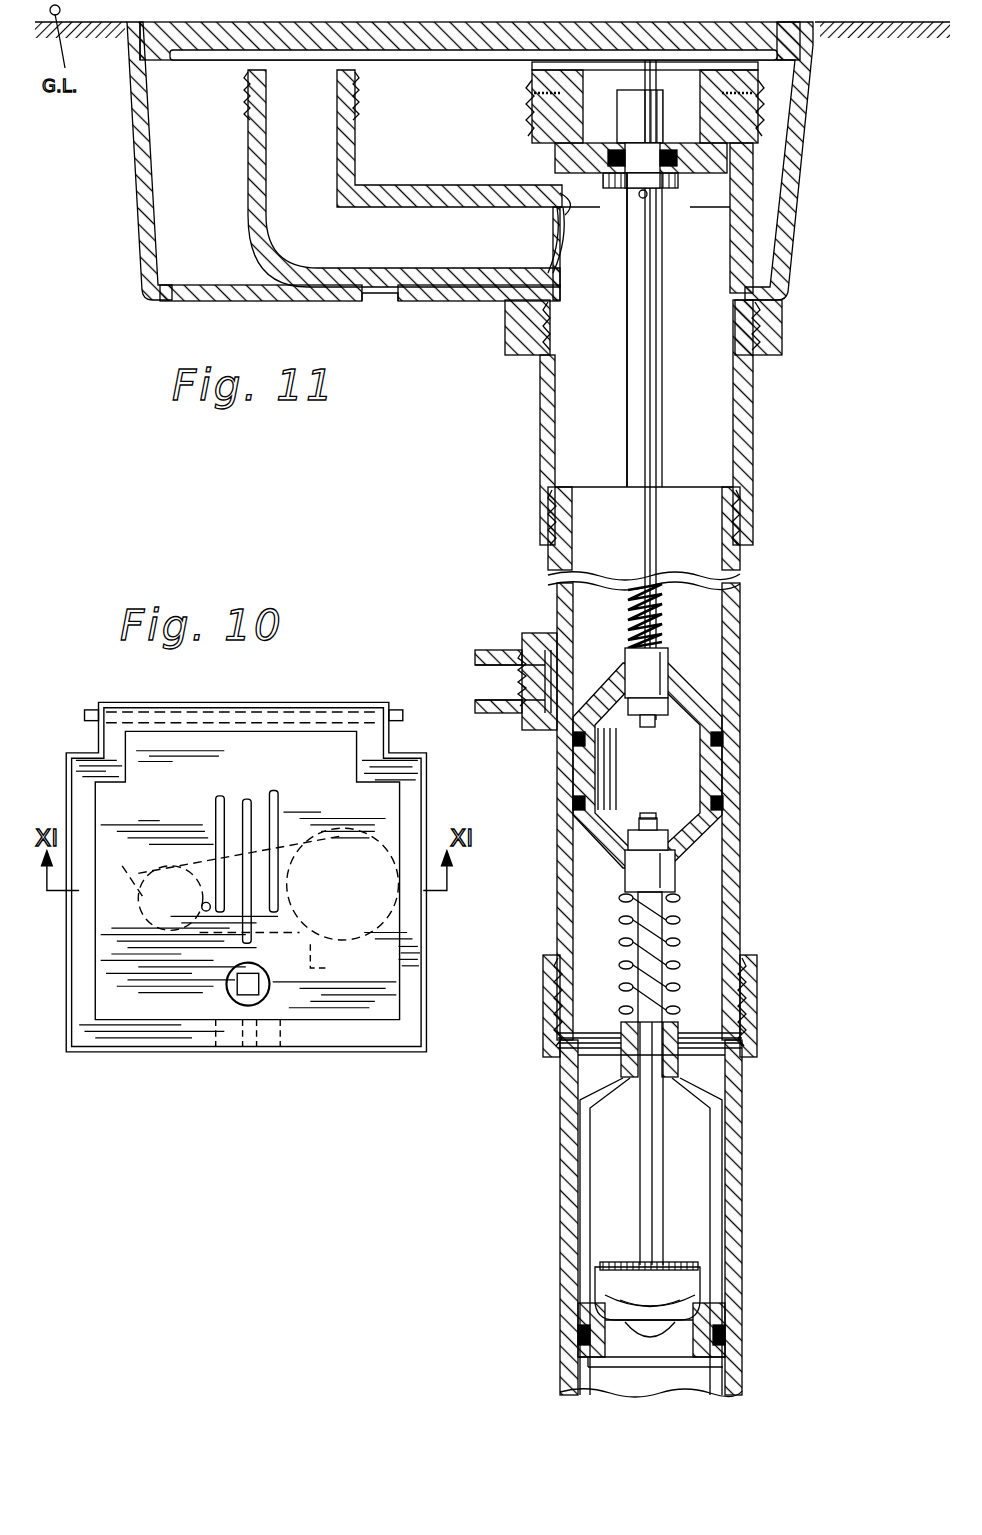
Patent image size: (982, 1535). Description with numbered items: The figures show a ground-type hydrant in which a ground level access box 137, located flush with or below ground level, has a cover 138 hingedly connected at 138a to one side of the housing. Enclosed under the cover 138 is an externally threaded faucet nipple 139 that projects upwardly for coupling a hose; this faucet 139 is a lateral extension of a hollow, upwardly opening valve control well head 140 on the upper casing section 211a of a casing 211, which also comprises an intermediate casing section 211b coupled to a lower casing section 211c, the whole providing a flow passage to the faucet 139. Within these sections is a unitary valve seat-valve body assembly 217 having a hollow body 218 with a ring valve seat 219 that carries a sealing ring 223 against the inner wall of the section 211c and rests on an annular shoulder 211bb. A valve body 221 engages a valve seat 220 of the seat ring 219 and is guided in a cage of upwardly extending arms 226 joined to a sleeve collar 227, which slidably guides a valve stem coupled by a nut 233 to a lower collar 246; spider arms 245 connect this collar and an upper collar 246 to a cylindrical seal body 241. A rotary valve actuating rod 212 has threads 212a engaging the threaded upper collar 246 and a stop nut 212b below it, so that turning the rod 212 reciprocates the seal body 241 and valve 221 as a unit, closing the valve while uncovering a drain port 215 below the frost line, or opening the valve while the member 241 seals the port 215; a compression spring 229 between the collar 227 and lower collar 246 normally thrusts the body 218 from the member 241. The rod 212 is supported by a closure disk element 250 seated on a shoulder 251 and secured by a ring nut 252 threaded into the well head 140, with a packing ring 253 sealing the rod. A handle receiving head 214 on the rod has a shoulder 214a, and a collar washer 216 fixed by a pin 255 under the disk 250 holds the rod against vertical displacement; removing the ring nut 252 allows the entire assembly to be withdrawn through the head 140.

In FIG. 11, the ground level access box 137 is at (145, 262).
In FIG. 10, the ground level access box 137 is at (108, 1025).
In FIG. 11, the cover 138 is at (372, 40).
In FIG. 10, the cover 138 is at (176, 806).
In FIG. 10, the hinge connection 138a is at (88, 705).
In FIG. 11, the faucet nipple 139 is at (248, 200).
In FIG. 10, the faucet nipple 139 is at (223, 884).
In FIG. 11, the valve control well head 140 is at (545, 112).
In FIG. 10, the valve control well head 140 is at (305, 945).
In FIG. 11, the casing 211 is at (790, 392).
In FIG. 11, the upper casing section 211a is at (755, 440).
In FIG. 11, the intermediate lower casing section 211b is at (740, 646).
In FIG. 11, the lower casing section 211c is at (566, 1222).
In FIG. 11, the annular shoulder 211bb is at (572, 1380).
In FIG. 11, the rotary valve actuating rod 212 is at (628, 394).
In FIG. 11, the threads 212a is at (665, 612).
In FIG. 11, the stop nut 212b is at (650, 727).
In FIG. 11, the handle receiving head 214 is at (628, 102).
In FIG. 11, the shoulder 214a is at (692, 190).
In FIG. 11, the drain port 215 is at (548, 686).
In FIG. 11, the collar washer 216 is at (615, 190).
In FIG. 11, the unitary valve seat-valve body assembly 217 is at (712, 1070).
In FIG. 11, the hollow body 218 is at (722, 1095).
In FIG. 11, the ring valve seat 219 is at (585, 1315).
In FIG. 11, the valve seat 220 is at (697, 1300).
In FIG. 11, the valve body 221 is at (675, 1290).
In FIG. 11, the sealing ring 223 is at (580, 1335).
In FIG. 11, the arms 226 is at (718, 1140).
In FIG. 11, the sleeve collar 227 is at (624, 1052).
In FIG. 11, the compression spring 229 is at (680, 942).
In FIG. 11, the nut 233 is at (650, 835).
In FIG. 11, the cylindrical seal body 241 is at (715, 776).
In FIG. 11, the spider arms 245 is at (692, 700).
In FIG. 11, the collar 246 is at (660, 668).
In FIG. 11, the supporting closure disk element 250 is at (720, 148).
In FIG. 11, the shoulder 251 is at (568, 212).
In FIG. 11, the ring nut 252 is at (560, 72).
In FIG. 11, the packing ring 253 is at (600, 162).
In FIG. 11, the pin 255 is at (641, 198).